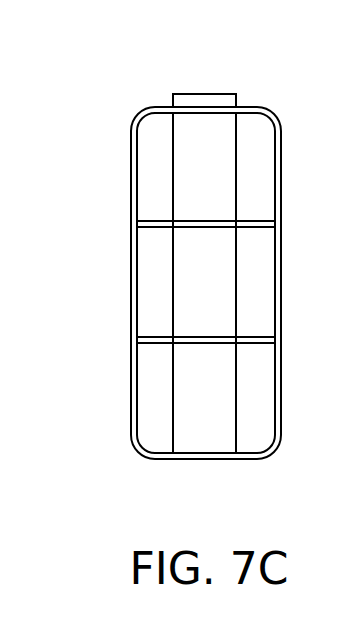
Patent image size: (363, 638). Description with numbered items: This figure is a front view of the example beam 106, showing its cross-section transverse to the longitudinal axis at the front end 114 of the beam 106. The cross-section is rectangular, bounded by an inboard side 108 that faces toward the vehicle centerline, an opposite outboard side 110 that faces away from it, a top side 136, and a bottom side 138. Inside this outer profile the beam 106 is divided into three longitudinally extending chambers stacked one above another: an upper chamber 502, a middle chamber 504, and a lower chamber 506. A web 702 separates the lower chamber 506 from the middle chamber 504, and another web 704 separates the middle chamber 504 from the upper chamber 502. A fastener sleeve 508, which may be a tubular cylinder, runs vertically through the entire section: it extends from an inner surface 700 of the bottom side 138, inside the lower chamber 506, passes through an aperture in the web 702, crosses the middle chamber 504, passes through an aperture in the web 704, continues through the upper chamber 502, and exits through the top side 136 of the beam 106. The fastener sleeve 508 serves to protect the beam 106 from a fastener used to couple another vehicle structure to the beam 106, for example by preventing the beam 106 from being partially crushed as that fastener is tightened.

The beam 106 is at (270, 108).
The inboard side 108 is at (131, 160).
The outboard side 110 is at (282, 165).
The front end 114 is at (282, 387).
The top side 136 is at (140, 118).
The bottom side 138 is at (197, 460).
The upper chamber 502 is at (147, 136).
The middle chamber 504 is at (148, 286).
The lower chamber 506 is at (148, 364).
The fastener sleeve 508 is at (199, 95).
The inner surface 700 is at (163, 452).
The web 702 is at (158, 337).
The web 704 is at (200, 222).